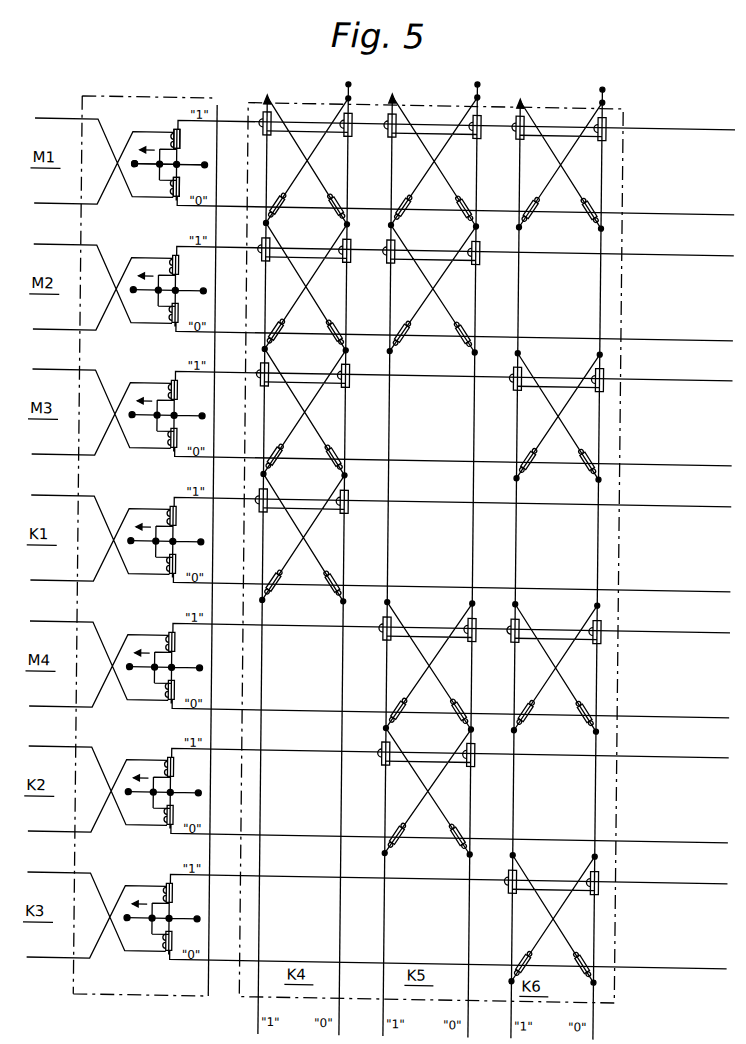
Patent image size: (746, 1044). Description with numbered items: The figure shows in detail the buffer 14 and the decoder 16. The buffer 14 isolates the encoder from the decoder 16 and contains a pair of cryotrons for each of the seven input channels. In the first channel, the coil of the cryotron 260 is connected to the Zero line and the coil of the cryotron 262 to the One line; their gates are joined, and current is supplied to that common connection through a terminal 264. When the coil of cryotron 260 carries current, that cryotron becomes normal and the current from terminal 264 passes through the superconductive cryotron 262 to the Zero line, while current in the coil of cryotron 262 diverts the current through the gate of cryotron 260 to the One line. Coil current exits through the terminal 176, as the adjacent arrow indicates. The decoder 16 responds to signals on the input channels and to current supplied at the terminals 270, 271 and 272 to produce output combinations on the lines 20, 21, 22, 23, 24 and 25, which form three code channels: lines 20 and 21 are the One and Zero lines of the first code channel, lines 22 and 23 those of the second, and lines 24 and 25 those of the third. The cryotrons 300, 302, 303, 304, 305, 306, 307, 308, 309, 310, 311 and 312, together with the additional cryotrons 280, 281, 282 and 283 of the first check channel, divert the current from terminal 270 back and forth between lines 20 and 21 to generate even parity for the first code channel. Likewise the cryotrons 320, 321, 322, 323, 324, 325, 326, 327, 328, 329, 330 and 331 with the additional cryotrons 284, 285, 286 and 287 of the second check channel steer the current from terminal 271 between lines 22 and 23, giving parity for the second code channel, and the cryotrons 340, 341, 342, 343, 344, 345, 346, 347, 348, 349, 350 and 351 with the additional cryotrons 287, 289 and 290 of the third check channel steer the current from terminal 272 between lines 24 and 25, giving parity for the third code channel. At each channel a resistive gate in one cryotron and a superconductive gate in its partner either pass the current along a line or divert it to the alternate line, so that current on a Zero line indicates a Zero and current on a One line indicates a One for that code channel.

The buffer 14 is at (140, 96).
The decoder 16 is at (288, 99).
The One line of channel K4 20 is at (268, 915).
The Zero line of channel K4 21 is at (349, 915).
The One line of channel K5 22 is at (393, 927).
The Zero line of channel K5 23 is at (478, 921).
The One line of channel K6 24 is at (521, 913).
The Zero line of channel K6 25 is at (603, 921).
The terminal 176 is at (137, 166).
The cryotron 260 is at (182, 129).
The cryotron 262 is at (184, 172).
The terminal 264 is at (197, 160).
The terminal 270 is at (350, 80).
The terminal 271 is at (479, 78).
The terminal 272 is at (604, 82).
The cryotron 280 is at (271, 512).
The cryotron 281 is at (343, 512).
The cryotron 282 is at (280, 589).
The cryotron 283 is at (333, 592).
The cryotron 284 is at (389, 766).
The cryotron 285 is at (472, 766).
The cryotron 286 is at (407, 841).
The cryotron 287 is at (462, 841).
The cryotron 289 is at (526, 946).
The cryotron 290 is at (584, 964).
The cryotron 300 is at (271, 135).
The cryotron 302 is at (343, 135).
The cryotron 303 is at (281, 191).
The cryotron 304 is at (336, 191).
The cryotron 305 is at (271, 261).
The cryotron 306 is at (279, 317).
The cryotron 307 is at (343, 261).
The cryotron 308 is at (340, 317).
The cryotron 309 is at (271, 386).
The cryotron 310 is at (343, 386).
The cryotron 311 is at (279, 442).
The cryotron 312 is at (340, 442).
The cryotron 320 is at (396, 135).
The cryotron 321 is at (472, 135).
The cryotron 322 is at (406, 191).
The cryotron 323 is at (464, 191).
The cryotron 324 is at (396, 261).
The cryotron 325 is at (472, 261).
The cryotron 326 is at (409, 323).
The cryotron 327 is at (469, 323).
The cryotron 328 is at (392, 640).
The cryotron 329 is at (472, 638).
The cryotron 330 is at (402, 694).
The cryotron 331 is at (470, 695).
The cryotron 340 is at (524, 135).
The cryotron 341 is at (598, 135).
The cryotron 342 is at (533, 191).
The cryotron 343 is at (597, 196).
The cryotron 344 is at (524, 386).
The cryotron 345 is at (607, 387).
The cryotron 346 is at (529, 445).
The cryotron 347 is at (596, 449).
The cryotron 348 is at (527, 638).
The cryotron 349 is at (607, 640).
The cryotron 350 is at (537, 703).
The cryotron 351 is at (597, 699).